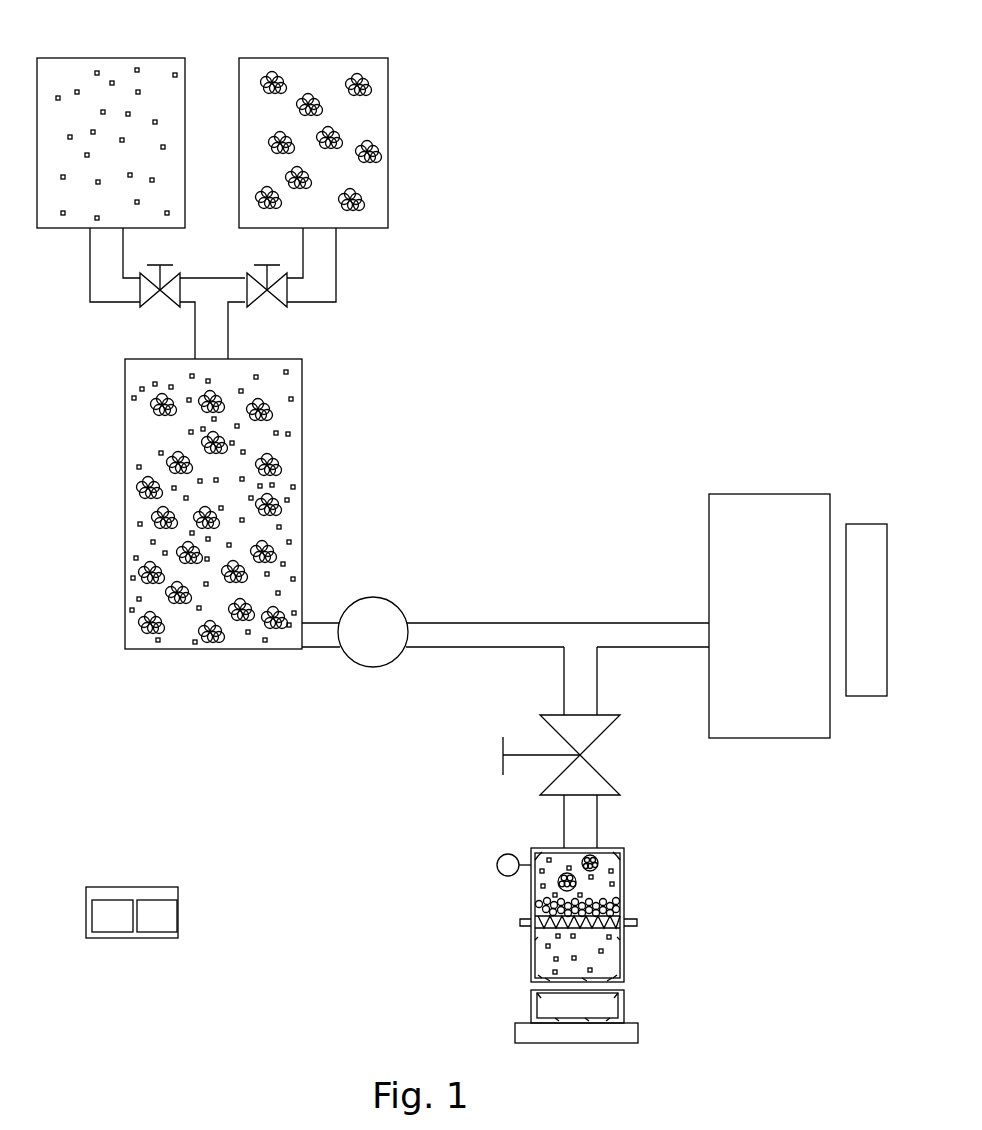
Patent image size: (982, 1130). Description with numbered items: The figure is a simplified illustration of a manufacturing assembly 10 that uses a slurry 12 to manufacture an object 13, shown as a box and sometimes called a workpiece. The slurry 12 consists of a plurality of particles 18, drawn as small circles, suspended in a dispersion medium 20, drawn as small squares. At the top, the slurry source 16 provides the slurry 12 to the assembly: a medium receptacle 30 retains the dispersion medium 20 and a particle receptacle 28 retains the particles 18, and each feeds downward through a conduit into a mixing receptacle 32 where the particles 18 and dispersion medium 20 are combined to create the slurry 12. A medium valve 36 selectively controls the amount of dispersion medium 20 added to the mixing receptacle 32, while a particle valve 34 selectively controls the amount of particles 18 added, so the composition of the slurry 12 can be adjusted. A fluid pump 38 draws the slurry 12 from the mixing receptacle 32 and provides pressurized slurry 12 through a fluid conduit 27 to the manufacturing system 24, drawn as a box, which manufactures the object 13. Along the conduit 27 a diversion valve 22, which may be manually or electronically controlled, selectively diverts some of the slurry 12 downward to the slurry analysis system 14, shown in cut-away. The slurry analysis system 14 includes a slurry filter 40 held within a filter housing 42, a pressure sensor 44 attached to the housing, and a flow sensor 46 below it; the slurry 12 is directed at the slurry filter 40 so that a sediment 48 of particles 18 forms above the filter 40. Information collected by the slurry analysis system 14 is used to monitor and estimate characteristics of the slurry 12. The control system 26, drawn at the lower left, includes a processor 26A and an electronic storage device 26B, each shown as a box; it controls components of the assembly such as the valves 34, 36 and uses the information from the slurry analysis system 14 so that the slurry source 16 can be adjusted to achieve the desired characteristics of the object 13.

The manufacturing assembly 10 is at (604, 90).
The slurry 12 is at (216, 489).
The object 13 is at (866, 610).
The slurry analysis system 14 is at (522, 945).
The slurry source 16 is at (307, 448).
The particles 18 is at (268, 78).
The dispersion medium 20 is at (77, 90).
The diversion valve 22 is at (592, 745).
The manufacturing system 24 is at (769, 616).
The control system 26 is at (163, 912).
The processor 26A is at (112, 916).
The electronic storage device 26B is at (157, 916).
The fluid conduit 27 is at (490, 618).
The particle receptacle 28 is at (344, 58).
The medium receptacle 30 is at (140, 58).
The mixing receptacle 32 is at (125, 438).
The particle valve 34 is at (285, 307).
The medium valve 36 is at (142, 308).
The fluid pump 38 is at (373, 632).
The slurry filter 40 is at (548, 920).
The filter housing 42 is at (531, 940).
The pressure sensor 44 is at (497, 865).
The flow sensor 46 is at (530, 999).
The sediment 48 is at (626, 900).